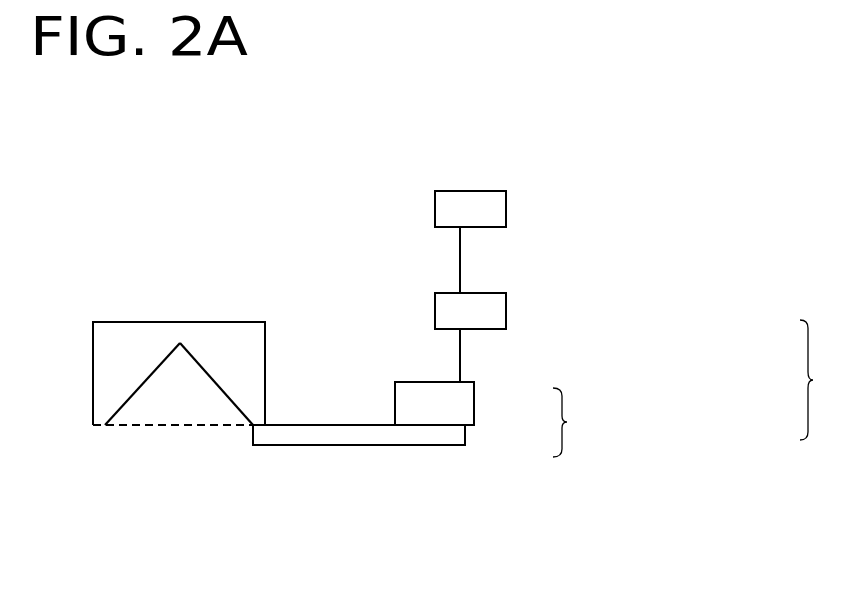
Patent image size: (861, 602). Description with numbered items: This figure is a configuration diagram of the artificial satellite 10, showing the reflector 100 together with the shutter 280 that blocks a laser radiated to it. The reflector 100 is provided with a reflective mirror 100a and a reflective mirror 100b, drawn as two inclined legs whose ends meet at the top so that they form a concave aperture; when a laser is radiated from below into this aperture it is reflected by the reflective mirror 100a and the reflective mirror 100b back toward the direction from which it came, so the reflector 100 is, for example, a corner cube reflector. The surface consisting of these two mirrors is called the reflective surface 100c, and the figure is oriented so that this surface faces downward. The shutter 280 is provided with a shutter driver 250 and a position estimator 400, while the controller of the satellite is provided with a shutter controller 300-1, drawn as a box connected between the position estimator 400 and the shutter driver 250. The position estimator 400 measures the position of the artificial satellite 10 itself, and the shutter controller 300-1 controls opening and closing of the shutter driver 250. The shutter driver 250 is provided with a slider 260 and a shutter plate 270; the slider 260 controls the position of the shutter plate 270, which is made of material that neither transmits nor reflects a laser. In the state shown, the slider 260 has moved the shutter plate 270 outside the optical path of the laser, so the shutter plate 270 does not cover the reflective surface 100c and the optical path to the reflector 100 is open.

The artificial satellite 10 is at (105, 211).
The reflector 100 is at (171, 322).
The reflective mirror 100a is at (128, 403).
The reflective mirror 100b is at (232, 403).
The reflective surface 100c is at (227, 487).
The shutter controller 300-1 is at (436, 293).
The position estimator 400 is at (506, 214).
The slider 260 is at (474, 405).
The shutter plate 270 is at (465, 436).
The shutter driver 250 is at (676, 422).
The shutter 280 is at (826, 380).